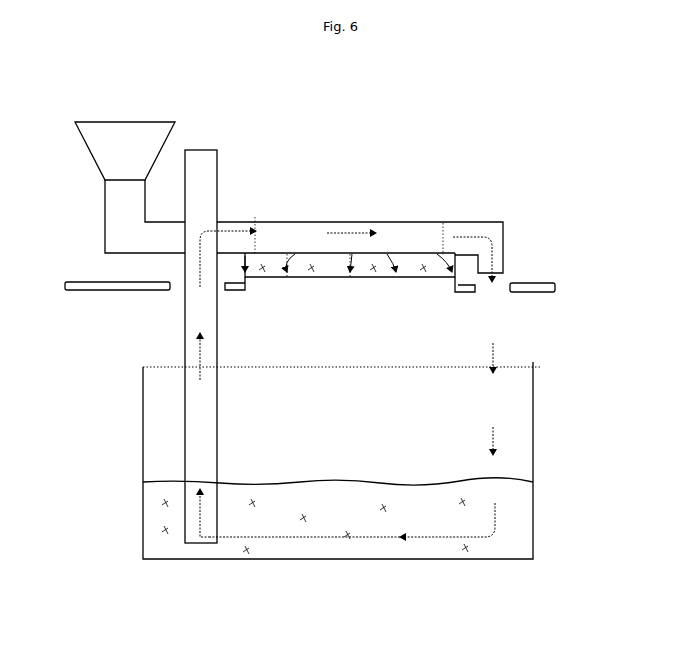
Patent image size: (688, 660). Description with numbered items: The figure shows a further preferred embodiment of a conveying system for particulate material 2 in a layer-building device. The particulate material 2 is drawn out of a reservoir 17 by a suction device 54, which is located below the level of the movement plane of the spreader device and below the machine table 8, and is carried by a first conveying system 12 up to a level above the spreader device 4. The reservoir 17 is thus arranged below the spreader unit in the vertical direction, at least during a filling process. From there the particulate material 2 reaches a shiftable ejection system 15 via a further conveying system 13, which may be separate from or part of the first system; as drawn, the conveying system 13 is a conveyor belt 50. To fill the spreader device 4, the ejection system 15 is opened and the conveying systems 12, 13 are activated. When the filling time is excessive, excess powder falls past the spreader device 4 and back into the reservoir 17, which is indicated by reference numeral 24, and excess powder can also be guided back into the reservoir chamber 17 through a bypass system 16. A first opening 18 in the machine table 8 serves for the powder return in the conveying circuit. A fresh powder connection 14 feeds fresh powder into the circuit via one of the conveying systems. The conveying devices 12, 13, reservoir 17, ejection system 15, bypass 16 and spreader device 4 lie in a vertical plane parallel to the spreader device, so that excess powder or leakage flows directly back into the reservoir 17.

The particulate material 2 is at (515, 522).
The spreader device 4 is at (447, 270).
The machine table 8 is at (78, 285).
The first conveying system 12 is at (198, 437).
The further conveying system 13 is at (143, 237).
The fresh powder connection 14 is at (103, 143).
The ejection system 15 is at (302, 237).
The bypass system 16 is at (498, 263).
The reservoir 17 is at (535, 425).
The first opening 18 is at (353, 287).
The excess powder falling past spreader device 24 is at (398, 275).
The conveyor belt 50 is at (265, 242).
The suction device 54 is at (197, 548).